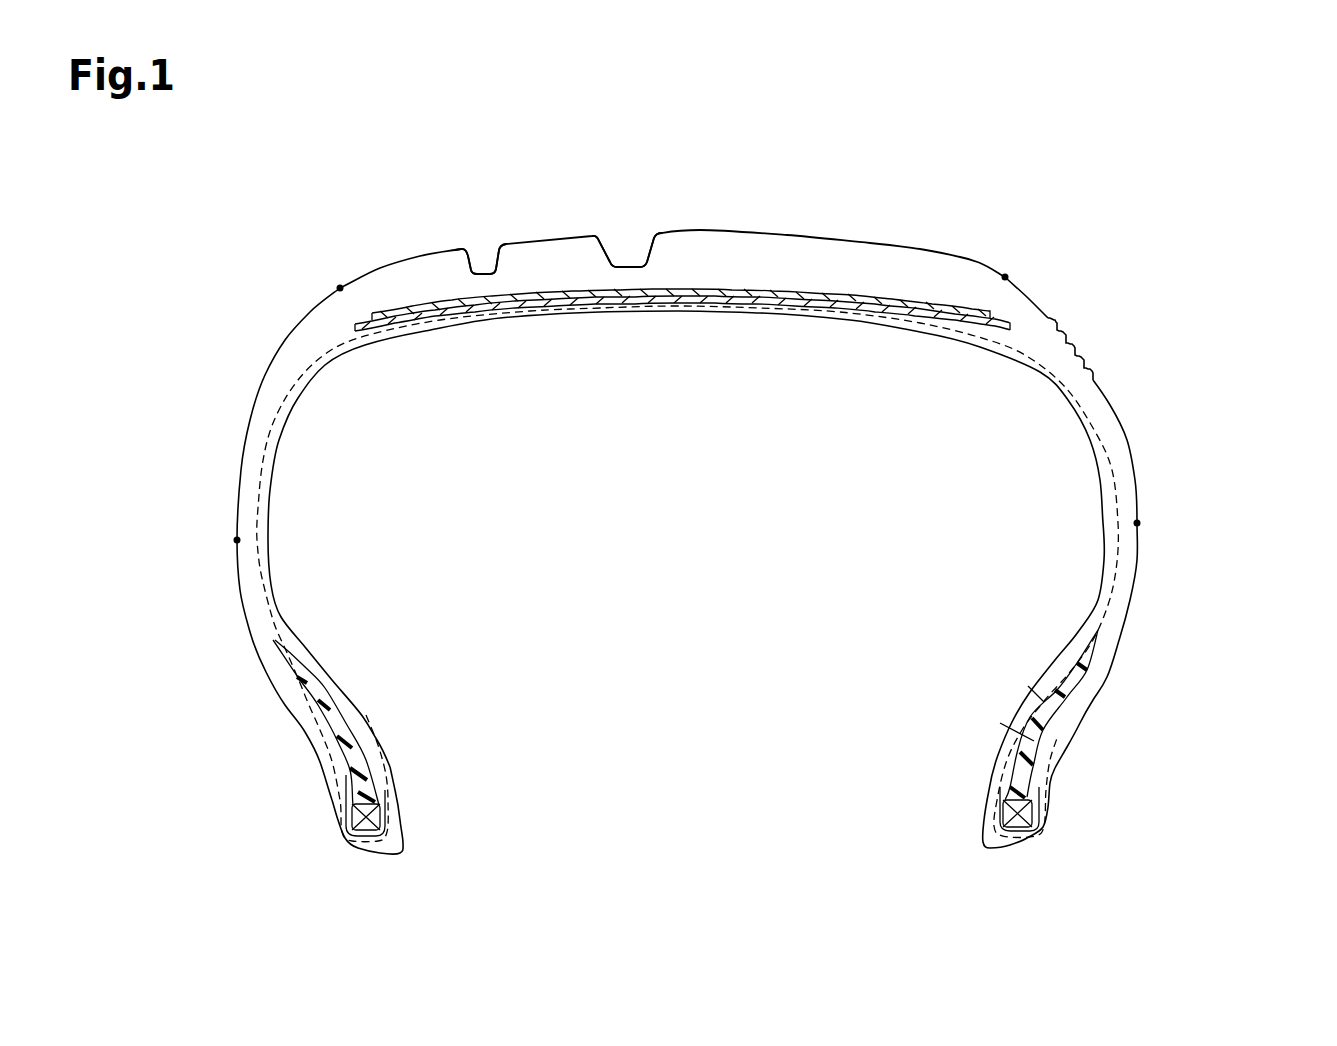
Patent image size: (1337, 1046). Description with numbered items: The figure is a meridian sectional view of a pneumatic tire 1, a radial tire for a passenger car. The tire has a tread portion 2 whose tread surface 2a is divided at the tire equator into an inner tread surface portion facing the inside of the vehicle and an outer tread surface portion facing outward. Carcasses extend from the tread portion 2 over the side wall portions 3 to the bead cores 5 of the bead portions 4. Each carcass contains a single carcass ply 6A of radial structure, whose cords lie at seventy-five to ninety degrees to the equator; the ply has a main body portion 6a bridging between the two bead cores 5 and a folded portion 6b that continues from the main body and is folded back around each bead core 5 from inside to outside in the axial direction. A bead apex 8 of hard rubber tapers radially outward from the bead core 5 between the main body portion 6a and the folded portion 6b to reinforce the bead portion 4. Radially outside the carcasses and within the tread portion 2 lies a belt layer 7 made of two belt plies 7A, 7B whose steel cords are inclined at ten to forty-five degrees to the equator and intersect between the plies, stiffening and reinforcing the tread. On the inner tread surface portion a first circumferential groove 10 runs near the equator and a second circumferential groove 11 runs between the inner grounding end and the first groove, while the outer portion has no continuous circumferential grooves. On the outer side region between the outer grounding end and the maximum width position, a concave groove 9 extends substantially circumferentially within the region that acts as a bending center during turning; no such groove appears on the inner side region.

The pneumatic tire 1 is at (1071, 172).
The tread portion 2 is at (785, 206).
The tread surface 2a is at (919, 228).
The side wall portion 3 is at (217, 557).
The bead portion 4 is at (305, 778).
The bead core 5 is at (380, 813).
The carcass ply 6A is at (905, 633).
The main body portion 6a is at (1033, 697).
The folded portion 6b is at (1013, 723).
The belt layer 7 is at (682, 366).
The belt ply 7A is at (827, 391).
The belt ply 7B is at (806, 292).
The bead apex 8 is at (333, 717).
The concave groove 9 is at (1066, 372).
The first circumferential groove 10 is at (625, 241).
The second circumferential groove 11 is at (481, 270).